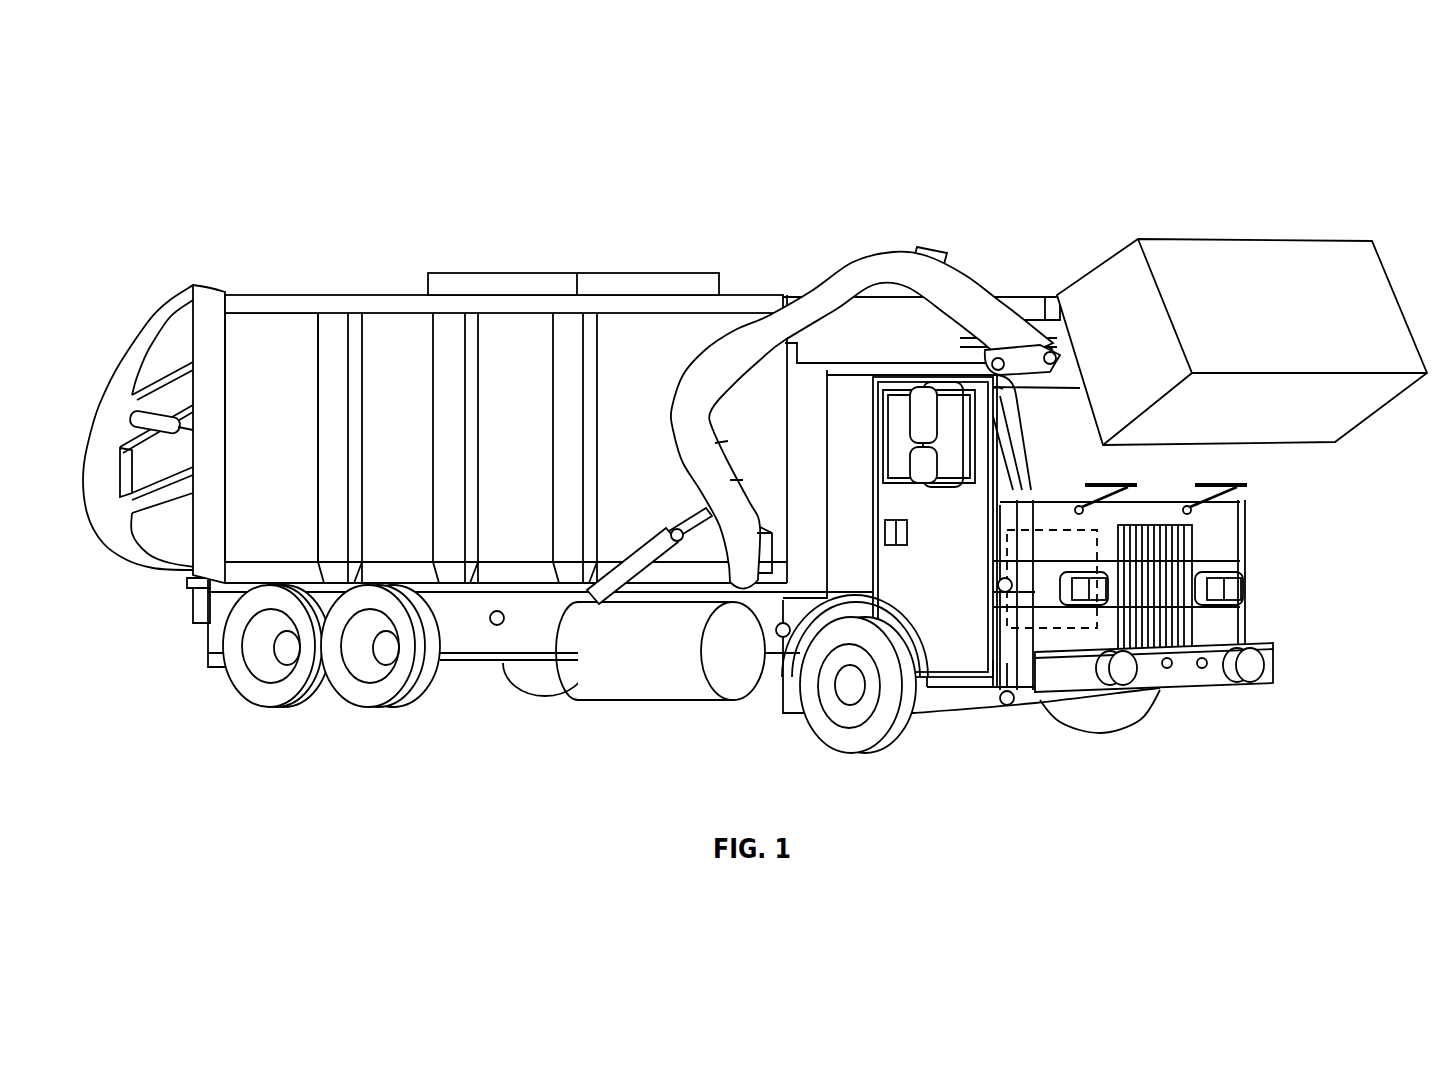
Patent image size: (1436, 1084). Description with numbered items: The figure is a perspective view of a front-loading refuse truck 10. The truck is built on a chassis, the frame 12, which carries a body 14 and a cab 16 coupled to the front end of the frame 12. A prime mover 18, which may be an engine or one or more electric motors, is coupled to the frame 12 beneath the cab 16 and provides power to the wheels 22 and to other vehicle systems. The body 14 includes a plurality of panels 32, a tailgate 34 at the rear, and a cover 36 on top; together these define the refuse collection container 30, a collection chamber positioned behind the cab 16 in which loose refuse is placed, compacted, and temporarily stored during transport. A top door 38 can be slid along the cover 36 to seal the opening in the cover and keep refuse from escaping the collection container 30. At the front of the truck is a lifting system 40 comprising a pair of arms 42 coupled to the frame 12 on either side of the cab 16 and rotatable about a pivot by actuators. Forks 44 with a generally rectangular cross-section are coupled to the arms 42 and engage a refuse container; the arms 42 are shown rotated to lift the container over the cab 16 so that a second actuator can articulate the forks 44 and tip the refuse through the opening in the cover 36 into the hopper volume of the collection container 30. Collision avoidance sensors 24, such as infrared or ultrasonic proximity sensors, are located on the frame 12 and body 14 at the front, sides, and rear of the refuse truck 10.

The refuse truck 10 is at (283, 170).
The frame 12 is at (533, 635).
The body 14 is at (596, 413).
The cab 16 is at (1005, 663).
The prime mover 18 is at (1075, 640).
The wheels 22 is at (886, 742).
The collision avoidance sensors 24 is at (497, 626).
The refuse collection container 30 is at (742, 254).
The panels 32 is at (287, 330).
The tailgate 34 is at (143, 343).
The cover 36 is at (347, 295).
The top door 38 is at (500, 270).
The lifting system 40 is at (865, 383).
The arms 42 is at (877, 270).
The forks 44 is at (1060, 300).